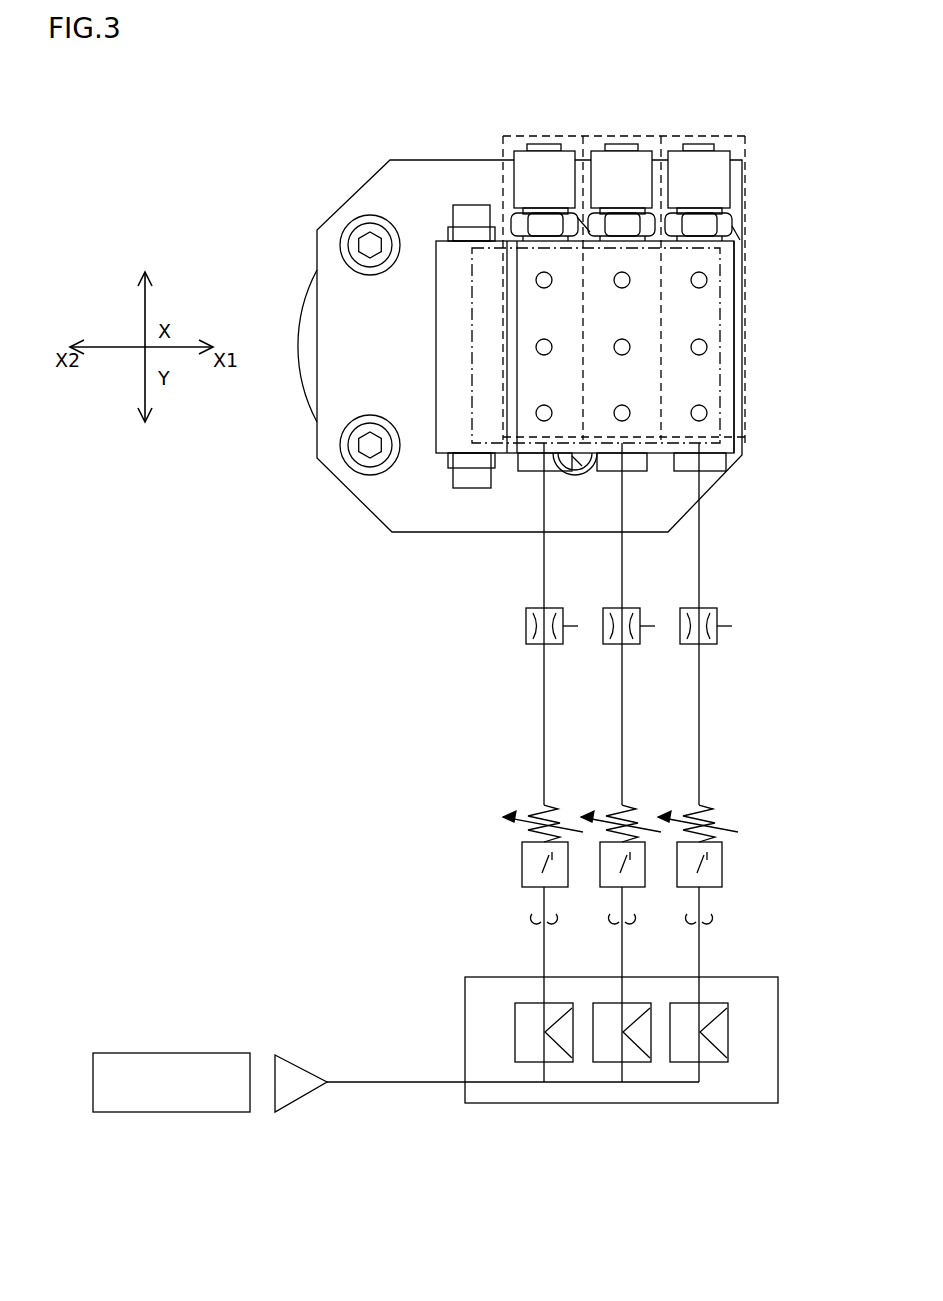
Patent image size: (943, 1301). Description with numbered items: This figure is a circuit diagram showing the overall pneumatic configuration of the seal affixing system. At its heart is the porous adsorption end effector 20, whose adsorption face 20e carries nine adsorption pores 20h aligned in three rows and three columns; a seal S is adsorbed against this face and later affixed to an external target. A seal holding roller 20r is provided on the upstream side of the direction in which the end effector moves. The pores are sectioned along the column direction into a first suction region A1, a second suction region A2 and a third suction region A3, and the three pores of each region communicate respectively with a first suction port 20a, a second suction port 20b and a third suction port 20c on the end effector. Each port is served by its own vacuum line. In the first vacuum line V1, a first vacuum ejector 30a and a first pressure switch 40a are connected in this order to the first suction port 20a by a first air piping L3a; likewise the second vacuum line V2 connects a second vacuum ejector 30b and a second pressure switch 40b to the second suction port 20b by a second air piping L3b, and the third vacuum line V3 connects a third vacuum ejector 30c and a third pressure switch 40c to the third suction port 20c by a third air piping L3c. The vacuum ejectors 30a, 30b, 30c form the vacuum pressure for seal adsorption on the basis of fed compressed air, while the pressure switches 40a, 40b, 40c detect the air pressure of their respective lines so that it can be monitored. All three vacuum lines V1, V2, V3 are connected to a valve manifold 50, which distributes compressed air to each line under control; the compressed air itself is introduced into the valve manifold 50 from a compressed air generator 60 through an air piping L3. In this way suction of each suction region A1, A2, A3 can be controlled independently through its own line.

The porous adsorption end effector 20 is at (347, 338).
The seal holding roller 20r is at (455, 397).
The third suction port 20c is at (523, 165).
The second suction port 20b is at (600, 165).
The first suction port 20a is at (679, 165).
The third suction region A3 is at (550, 137).
The second suction region A2 is at (627, 137).
The first suction region A1 is at (705, 137).
The adsorption face 20e is at (728, 263).
The adsorption pores 20h is at (706, 286).
The seal S is at (722, 378).
The third air piping L3c is at (545, 558).
The second air piping L3b is at (623, 558).
The first air piping L3a is at (700, 558).
The third vacuum ejector 30c is at (565, 640).
The second vacuum ejector 30b is at (642, 640).
The first vacuum ejector 30a is at (719, 640).
The third pressure switch 40c is at (568, 870).
The second pressure switch 40b is at (645, 870).
The first pressure switch 40a is at (722, 870).
The third vacuum line V3 is at (551, 925).
The second vacuum line V2 is at (629, 925).
The first vacuum line V1 is at (706, 925).
The valve manifold 50 is at (752, 977).
The compressed air generator 60 is at (178, 1053).
The air piping L3 is at (383, 1082).